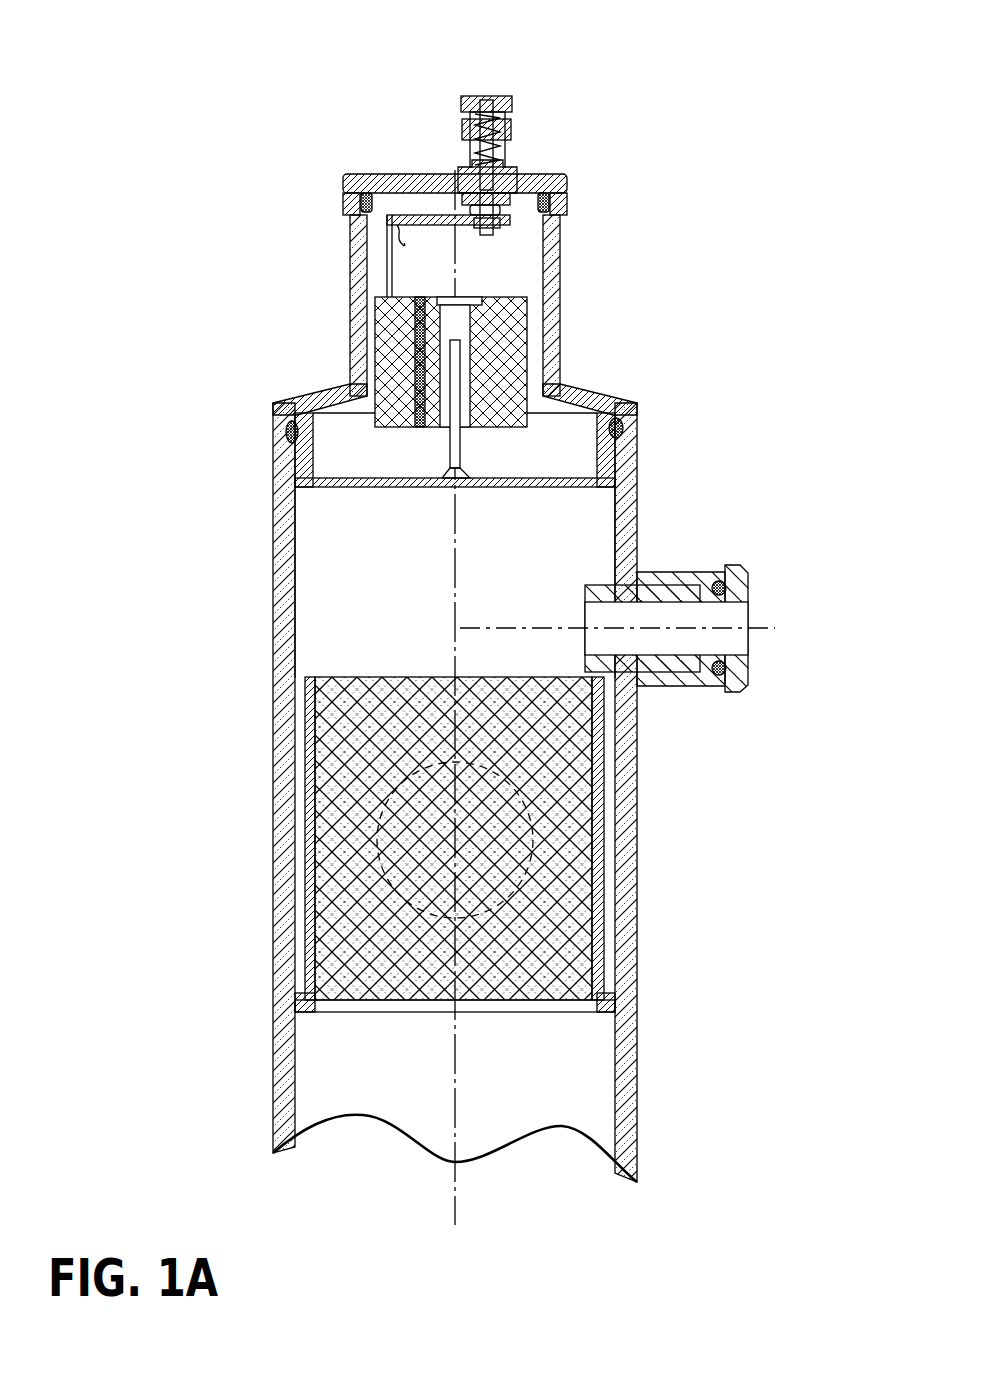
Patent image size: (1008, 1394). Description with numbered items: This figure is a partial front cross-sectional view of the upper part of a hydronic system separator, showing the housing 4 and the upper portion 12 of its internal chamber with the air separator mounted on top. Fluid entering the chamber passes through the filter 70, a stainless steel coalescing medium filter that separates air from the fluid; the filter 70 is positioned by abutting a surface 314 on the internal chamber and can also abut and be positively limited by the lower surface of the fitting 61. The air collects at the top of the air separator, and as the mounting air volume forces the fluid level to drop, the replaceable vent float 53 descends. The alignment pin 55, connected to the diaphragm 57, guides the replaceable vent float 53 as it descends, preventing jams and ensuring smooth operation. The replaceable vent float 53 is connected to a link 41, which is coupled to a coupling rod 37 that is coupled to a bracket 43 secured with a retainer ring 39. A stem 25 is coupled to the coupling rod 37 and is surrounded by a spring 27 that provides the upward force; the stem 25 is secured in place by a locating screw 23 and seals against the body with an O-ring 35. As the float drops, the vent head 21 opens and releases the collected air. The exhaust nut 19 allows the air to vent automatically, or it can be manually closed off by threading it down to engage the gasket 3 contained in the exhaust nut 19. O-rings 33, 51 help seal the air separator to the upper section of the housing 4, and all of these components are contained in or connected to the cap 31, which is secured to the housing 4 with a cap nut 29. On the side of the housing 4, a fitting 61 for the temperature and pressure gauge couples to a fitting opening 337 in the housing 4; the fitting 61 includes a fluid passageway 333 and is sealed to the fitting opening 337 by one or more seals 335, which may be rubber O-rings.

The gasket 3 is at (478, 95).
The exhaust nut 19 is at (513, 100).
The vent head 21 is at (513, 108).
The locating screw 23 is at (515, 125).
The stem 25 is at (468, 150).
The spring 27 is at (517, 143).
The cap nut 29 is at (552, 202).
The cap 31 is at (567, 185).
The O-ring 33 is at (540, 212).
The O-ring 35 is at (520, 218).
The coupling rod 37 is at (484, 236).
The retainer ring 39 is at (450, 203).
The link 41 is at (360, 272).
The bracket 43 is at (392, 226).
The O-ring 51 is at (624, 426).
The replaceable vent float 53 is at (520, 345).
The alignment pin 55 is at (612, 470).
The diaphragm 57 is at (340, 483).
The upper portion 12 is at (357, 573).
The fitting opening 337 is at (680, 574).
The seal 335 is at (727, 590).
The fluid passageway 333 is at (712, 636).
The fitting 61 is at (727, 690).
The filter 70 is at (525, 842).
The housing 4 is at (628, 915).
The surface 314 is at (300, 1000).